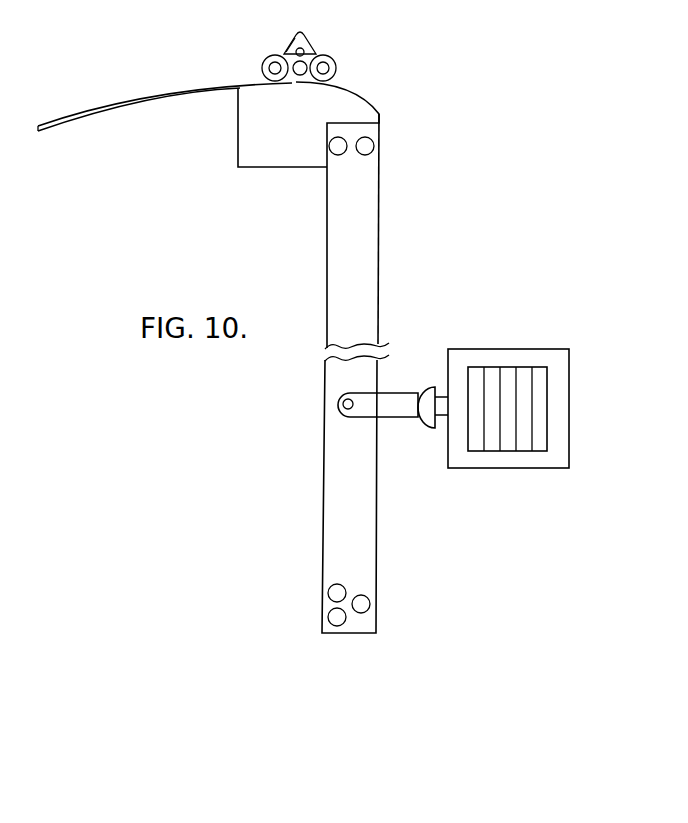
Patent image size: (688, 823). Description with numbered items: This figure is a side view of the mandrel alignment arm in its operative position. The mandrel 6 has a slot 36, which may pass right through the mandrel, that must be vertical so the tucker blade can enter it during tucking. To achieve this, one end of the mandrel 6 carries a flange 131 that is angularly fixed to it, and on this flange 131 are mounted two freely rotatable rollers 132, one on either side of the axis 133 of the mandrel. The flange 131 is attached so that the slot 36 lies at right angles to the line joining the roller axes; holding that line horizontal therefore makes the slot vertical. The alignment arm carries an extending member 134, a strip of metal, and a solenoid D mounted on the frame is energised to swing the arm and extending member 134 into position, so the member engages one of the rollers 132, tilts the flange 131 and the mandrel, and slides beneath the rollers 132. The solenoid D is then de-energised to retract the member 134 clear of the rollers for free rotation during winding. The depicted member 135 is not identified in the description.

The mandrel 6 is at (289, 50).
The slot 36 is at (309, 43).
The flange 131 is at (318, 54).
The rollers 132 is at (263, 62).
The axis 133 is at (301, 76).
The extending member 134 is at (145, 95).
The support arm 135 is at (370, 287).
The solenoid D is at (537, 373).